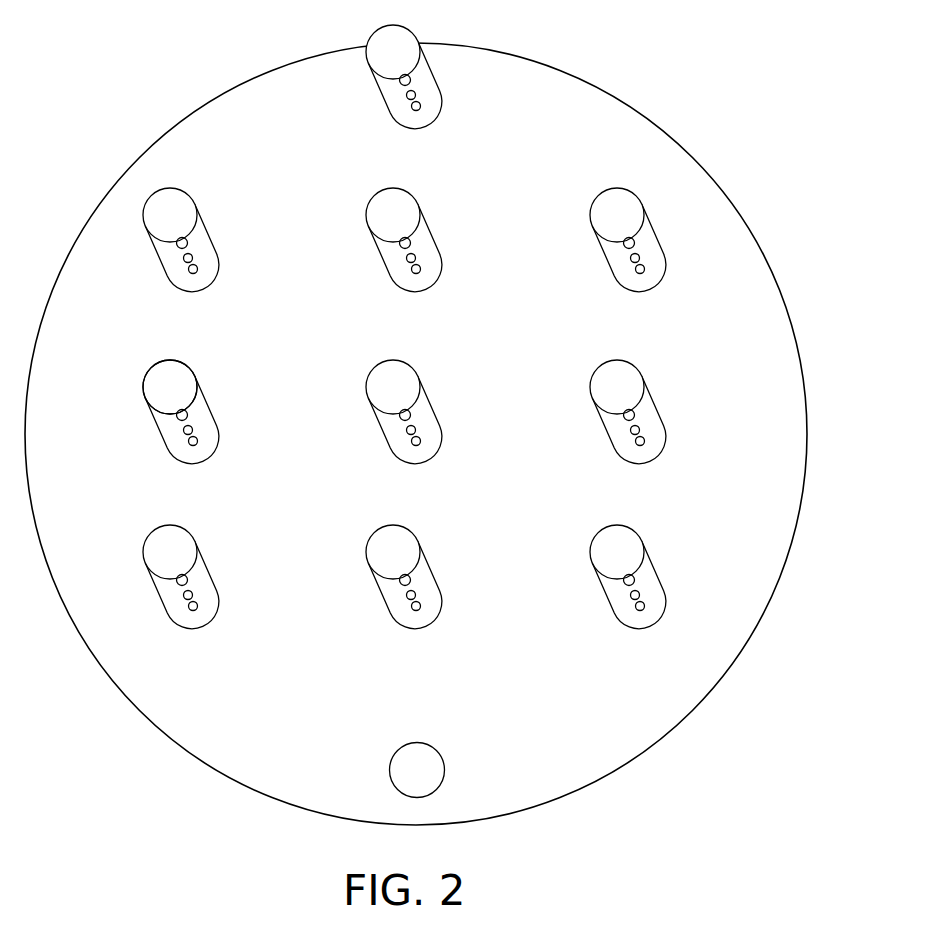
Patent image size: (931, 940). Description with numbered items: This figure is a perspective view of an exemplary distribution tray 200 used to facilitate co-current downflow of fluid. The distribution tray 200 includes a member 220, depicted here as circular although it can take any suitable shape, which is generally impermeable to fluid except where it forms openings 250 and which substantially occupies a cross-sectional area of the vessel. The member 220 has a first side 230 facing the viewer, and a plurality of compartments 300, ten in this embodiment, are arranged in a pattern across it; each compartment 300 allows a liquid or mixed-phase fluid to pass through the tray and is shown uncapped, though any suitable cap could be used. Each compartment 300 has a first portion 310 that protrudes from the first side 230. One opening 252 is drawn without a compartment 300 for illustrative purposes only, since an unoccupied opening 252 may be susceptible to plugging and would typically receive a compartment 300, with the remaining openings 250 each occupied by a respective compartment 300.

The distribution tray 200 is at (716, 97).
The member 220 is at (86, 645).
The first side 230 is at (518, 111).
The openings 250 is at (122, 136).
The opening 252 is at (433, 745).
The compartment 300 is at (150, 407).
The first portion 310 is at (172, 362).